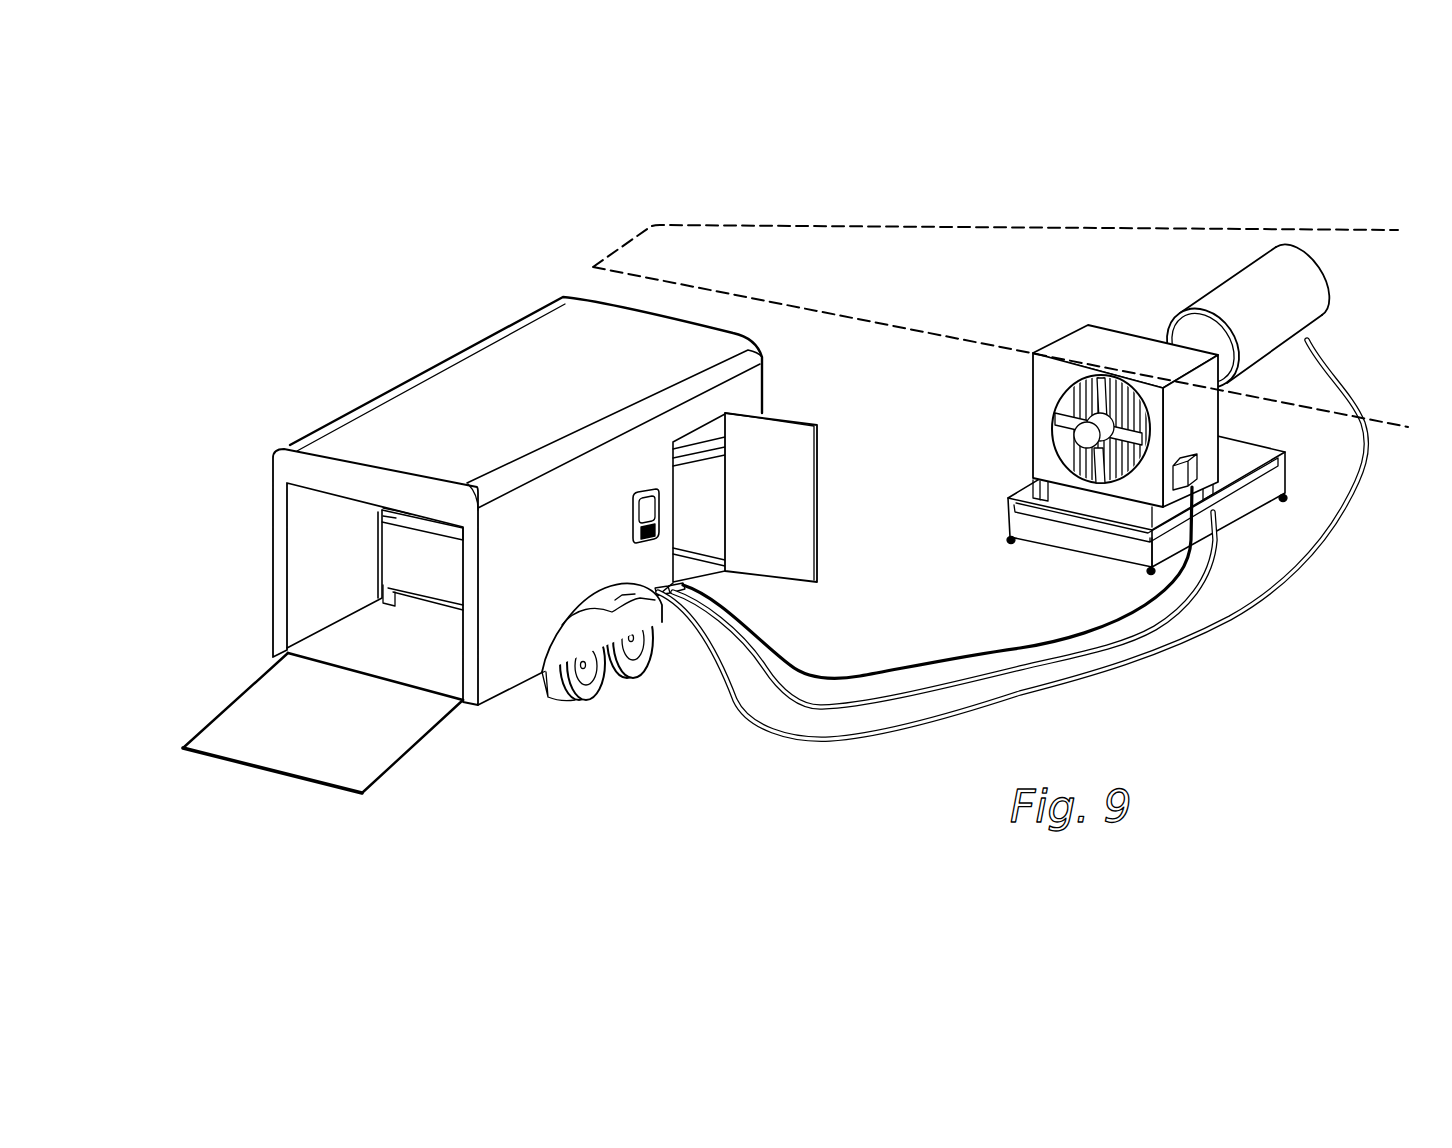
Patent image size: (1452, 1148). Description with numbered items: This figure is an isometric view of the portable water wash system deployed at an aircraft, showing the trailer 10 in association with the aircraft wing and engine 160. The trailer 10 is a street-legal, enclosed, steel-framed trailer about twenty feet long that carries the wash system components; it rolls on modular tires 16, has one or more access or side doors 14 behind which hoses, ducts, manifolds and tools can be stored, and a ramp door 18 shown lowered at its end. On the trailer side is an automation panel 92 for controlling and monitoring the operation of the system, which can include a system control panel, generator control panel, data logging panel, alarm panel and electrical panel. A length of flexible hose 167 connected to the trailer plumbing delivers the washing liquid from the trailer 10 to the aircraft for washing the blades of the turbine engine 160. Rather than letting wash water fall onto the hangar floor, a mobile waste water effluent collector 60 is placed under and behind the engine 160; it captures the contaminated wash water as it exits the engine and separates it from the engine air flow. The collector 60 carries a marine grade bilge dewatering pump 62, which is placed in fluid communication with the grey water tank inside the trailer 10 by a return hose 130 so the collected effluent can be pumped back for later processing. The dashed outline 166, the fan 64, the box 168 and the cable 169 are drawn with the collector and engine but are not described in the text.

The trailer 10 is at (300, 380).
The side door 14 is at (819, 501).
The modular tires 16 is at (648, 668).
The ramp door 18 is at (246, 683).
The waste water effluent collector 60 is at (1111, 426).
The dewatering pump 62 is at (1108, 323).
The condenser fan 64 is at (1090, 433).
The automation panel 92 is at (633, 537).
The return hose 130 is at (1213, 572).
The aircraft engine 160 is at (1327, 293).
The enclosure outline 166 is at (866, 227).
The flexible hose 167 is at (1233, 635).
The junction box 168 is at (1183, 458).
The power cable 169 is at (1107, 627).